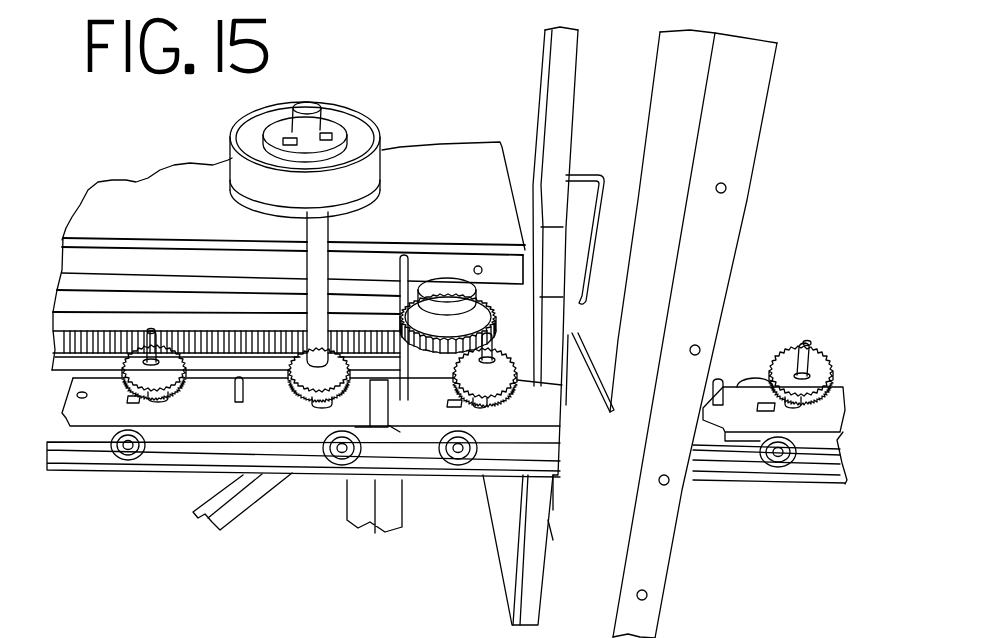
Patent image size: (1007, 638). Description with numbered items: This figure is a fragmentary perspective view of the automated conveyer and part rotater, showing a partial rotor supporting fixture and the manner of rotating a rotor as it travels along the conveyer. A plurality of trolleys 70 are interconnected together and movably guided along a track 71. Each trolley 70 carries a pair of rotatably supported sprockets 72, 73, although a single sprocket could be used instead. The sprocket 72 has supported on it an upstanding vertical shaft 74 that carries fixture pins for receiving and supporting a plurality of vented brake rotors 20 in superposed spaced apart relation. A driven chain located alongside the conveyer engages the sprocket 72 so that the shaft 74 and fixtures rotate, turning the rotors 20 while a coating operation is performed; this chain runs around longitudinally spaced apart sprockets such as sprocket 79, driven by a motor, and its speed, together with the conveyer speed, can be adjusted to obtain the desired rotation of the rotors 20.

The vented brake rotor 20 is at (357, 103).
The trolley 70 is at (187, 418).
The track 71 is at (63, 445).
The sprocket 72 is at (303, 390).
The sprocket 73 is at (147, 375).
The vertical shaft 74 is at (317, 233).
The sprocket 79 is at (450, 288).